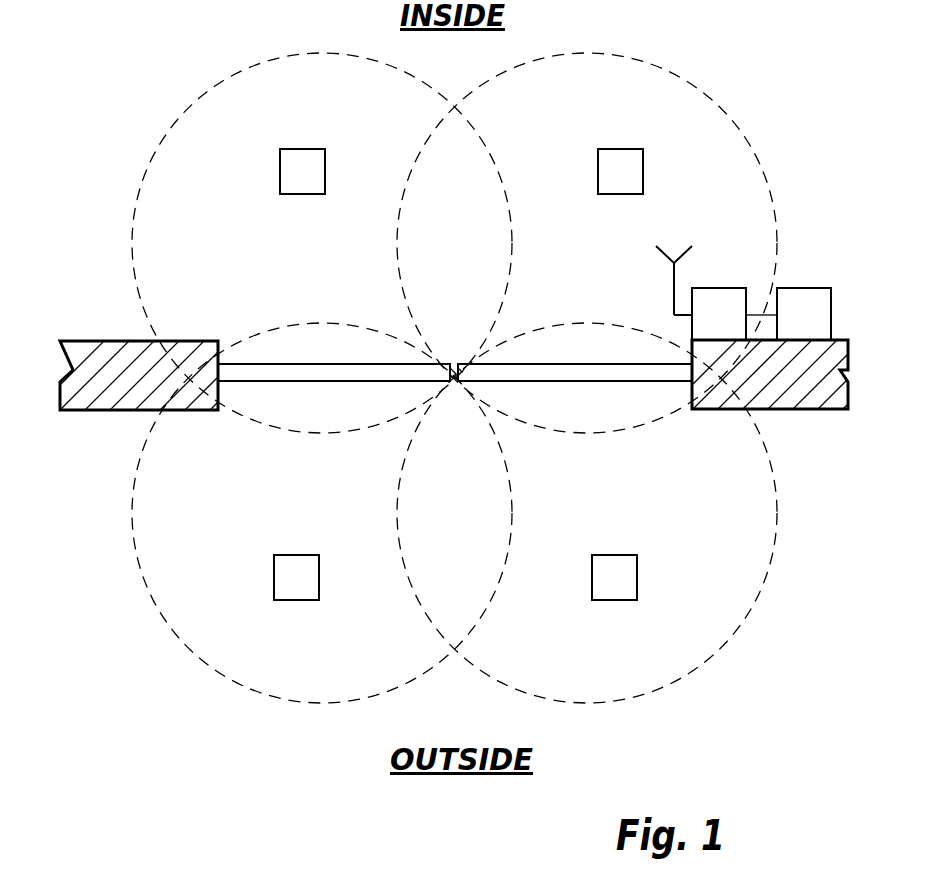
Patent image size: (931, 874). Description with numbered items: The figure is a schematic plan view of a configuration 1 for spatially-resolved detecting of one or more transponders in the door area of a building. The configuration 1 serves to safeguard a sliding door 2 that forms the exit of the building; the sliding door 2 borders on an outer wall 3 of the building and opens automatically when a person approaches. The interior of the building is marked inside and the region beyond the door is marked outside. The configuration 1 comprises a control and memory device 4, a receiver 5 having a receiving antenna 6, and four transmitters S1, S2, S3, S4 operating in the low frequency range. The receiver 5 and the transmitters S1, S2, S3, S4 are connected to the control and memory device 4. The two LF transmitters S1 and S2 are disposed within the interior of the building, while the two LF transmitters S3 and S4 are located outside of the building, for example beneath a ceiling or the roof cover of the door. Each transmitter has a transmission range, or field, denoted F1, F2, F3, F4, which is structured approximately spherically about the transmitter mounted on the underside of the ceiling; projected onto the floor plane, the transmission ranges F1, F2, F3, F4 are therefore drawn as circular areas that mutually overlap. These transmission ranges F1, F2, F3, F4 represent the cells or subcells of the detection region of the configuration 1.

The configuration 1 is at (454, 447).
The sliding door 2 is at (548, 372).
The outer wall 3 is at (468, 380).
The control and memory device 4 is at (804, 314).
The receiver 5 is at (734, 314).
The receiving antenna 6 is at (688, 265).
The LF transmitter S1 is at (288, 167).
The LF transmitter S2 is at (633, 165).
The LF transmitter S3 is at (305, 588).
The LF transmitter S4 is at (605, 588).
The transmission range F1 is at (322, 243).
The transmission range F2 is at (587, 243).
The transmission range F3 is at (322, 513).
The transmission range F4 is at (587, 513).